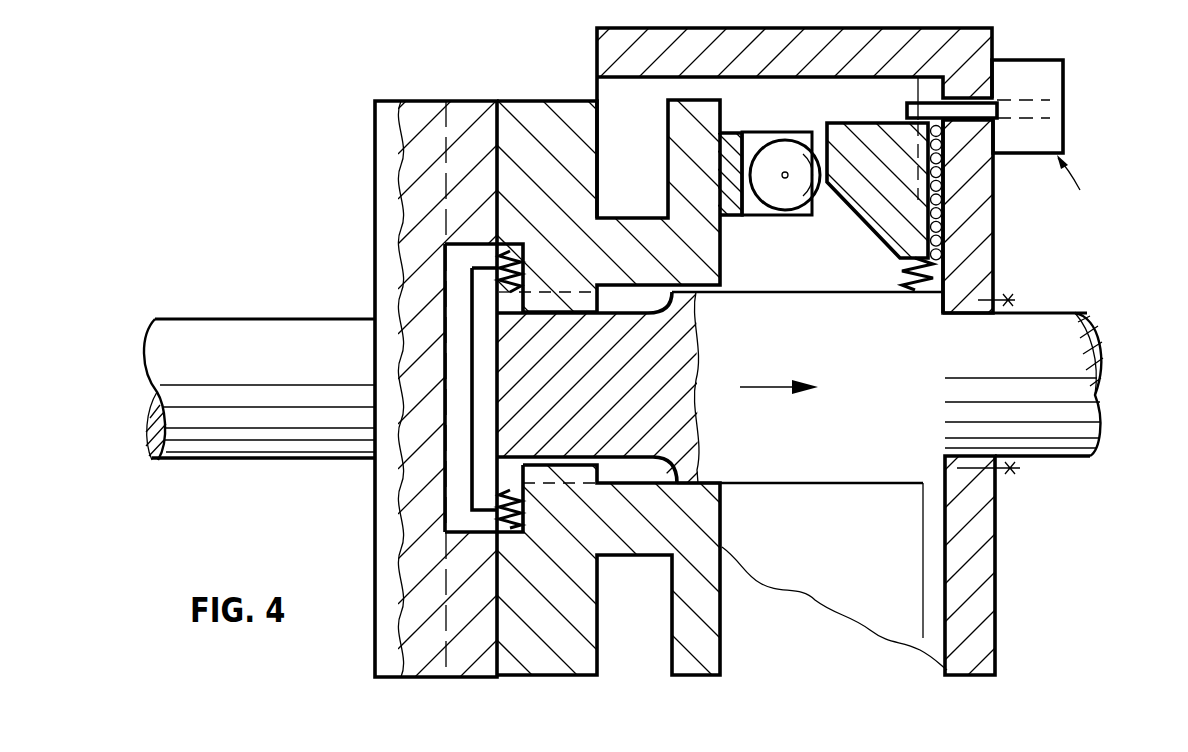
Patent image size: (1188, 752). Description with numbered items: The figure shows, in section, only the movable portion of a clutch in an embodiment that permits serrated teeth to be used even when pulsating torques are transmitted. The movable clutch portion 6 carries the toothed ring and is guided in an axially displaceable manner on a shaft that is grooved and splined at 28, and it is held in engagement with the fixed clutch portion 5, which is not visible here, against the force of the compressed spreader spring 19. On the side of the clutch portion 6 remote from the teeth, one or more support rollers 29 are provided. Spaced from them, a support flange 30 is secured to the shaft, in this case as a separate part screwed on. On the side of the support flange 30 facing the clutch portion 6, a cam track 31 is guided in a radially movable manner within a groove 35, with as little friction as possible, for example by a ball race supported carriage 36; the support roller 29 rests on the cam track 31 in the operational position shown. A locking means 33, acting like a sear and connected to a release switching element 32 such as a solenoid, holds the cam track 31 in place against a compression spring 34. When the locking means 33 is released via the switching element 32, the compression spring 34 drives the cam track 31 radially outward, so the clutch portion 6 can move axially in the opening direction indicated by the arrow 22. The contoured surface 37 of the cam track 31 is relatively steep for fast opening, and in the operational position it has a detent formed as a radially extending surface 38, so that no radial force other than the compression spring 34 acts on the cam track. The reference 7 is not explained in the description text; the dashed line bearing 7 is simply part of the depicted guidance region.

The clutch portion 5 is at (380, 177).
The movable clutch portion 6 is at (518, 122).
The bore 7 is at (466, 116).
The spreader spring 19 is at (498, 258).
The arrow 22 is at (767, 388).
The groove and spline 28 is at (498, 473).
The support roller 29 is at (765, 160).
The support flange 30 is at (1000, 286).
The cam track 31 is at (903, 180).
The release switching element 32 is at (1043, 85).
The locking means 33 is at (960, 103).
The compression spring 34 is at (912, 293).
The groove 35 is at (935, 270).
The ball race supported carriage 36 is at (947, 221).
The contoured surface 37 is at (870, 225).
The radially extending surface 38 is at (820, 135).